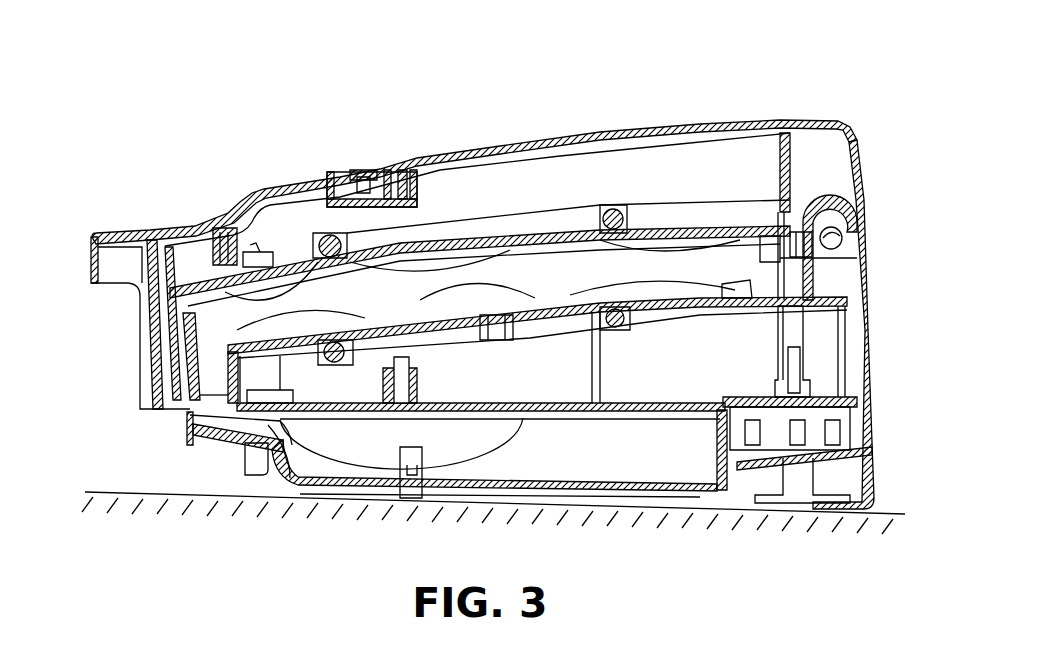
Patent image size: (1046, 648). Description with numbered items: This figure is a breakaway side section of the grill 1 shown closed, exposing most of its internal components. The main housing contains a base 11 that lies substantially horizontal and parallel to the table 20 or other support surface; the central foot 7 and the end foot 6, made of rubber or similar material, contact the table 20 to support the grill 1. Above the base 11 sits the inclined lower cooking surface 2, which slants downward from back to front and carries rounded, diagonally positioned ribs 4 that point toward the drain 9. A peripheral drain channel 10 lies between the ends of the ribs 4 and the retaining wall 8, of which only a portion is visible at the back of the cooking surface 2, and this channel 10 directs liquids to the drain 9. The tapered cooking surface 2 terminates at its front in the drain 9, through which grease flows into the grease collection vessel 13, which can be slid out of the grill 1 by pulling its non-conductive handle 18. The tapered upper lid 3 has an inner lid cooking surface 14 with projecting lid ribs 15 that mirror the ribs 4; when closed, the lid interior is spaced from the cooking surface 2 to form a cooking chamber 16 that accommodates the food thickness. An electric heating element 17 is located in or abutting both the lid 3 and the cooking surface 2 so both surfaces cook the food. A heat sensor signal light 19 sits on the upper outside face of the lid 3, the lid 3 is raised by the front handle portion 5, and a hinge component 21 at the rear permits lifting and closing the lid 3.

The grill 1 is at (750, 104).
The inclined lower cooking surface 2 is at (412, 310).
The lid 3 is at (660, 122).
The ribs 4 is at (258, 320).
The handle portion 5 is at (88, 258).
The rubber feet stands 6 is at (866, 176).
The foot 7 is at (408, 498).
The retaining wall 8 is at (743, 290).
The drain 9 is at (228, 372).
The peripheral drain channel 10 is at (754, 312).
The base 11 is at (343, 412).
The grease collection vessel 13 is at (268, 483).
The inner lid cooking surface 14 is at (490, 243).
The lid ribs 15 is at (320, 268).
The cooking chamber 16 is at (200, 303).
The electric heating element 17 is at (333, 240).
The handle 18 is at (187, 425).
The heat sensor signal light 19 is at (362, 170).
The table 20 is at (192, 494).
The hinge component 21 is at (857, 215).